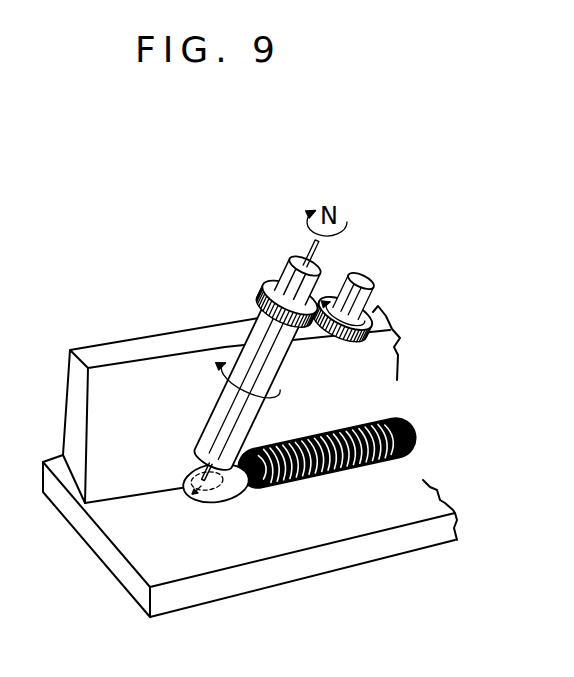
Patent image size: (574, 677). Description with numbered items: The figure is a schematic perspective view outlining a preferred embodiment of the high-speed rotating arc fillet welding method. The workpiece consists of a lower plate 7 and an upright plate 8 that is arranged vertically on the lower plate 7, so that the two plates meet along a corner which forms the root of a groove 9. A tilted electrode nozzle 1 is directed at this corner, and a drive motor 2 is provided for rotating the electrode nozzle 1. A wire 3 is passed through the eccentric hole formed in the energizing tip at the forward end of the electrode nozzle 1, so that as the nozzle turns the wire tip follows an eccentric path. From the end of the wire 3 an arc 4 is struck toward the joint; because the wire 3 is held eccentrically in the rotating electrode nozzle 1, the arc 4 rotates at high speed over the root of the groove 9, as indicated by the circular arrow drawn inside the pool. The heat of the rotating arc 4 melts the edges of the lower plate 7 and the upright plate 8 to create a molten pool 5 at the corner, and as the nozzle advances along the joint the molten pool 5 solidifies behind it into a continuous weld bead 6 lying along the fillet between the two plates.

The electrode nozzle 1 is at (283, 366).
The drive motor 2 is at (373, 298).
The wire 3 is at (200, 470).
The arc 4 is at (197, 495).
The molten pool 5 is at (238, 480).
The weld bead 6 is at (360, 468).
The lower plate 7 is at (136, 548).
The upright plate 8 is at (102, 406).
The root of a groove 9 is at (102, 502).